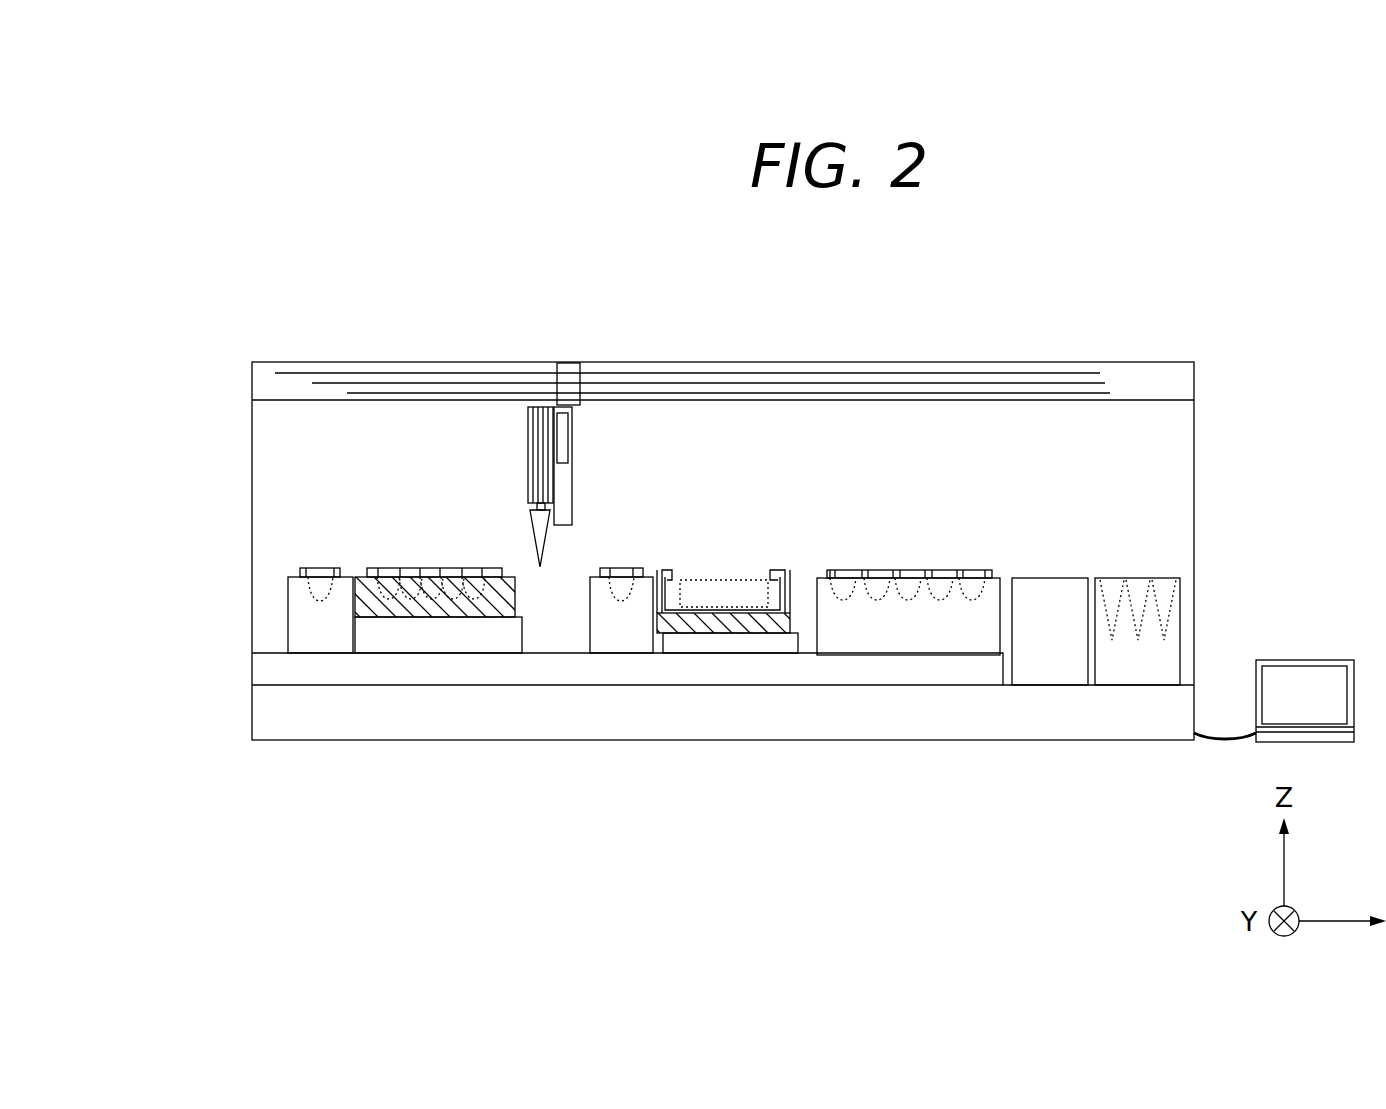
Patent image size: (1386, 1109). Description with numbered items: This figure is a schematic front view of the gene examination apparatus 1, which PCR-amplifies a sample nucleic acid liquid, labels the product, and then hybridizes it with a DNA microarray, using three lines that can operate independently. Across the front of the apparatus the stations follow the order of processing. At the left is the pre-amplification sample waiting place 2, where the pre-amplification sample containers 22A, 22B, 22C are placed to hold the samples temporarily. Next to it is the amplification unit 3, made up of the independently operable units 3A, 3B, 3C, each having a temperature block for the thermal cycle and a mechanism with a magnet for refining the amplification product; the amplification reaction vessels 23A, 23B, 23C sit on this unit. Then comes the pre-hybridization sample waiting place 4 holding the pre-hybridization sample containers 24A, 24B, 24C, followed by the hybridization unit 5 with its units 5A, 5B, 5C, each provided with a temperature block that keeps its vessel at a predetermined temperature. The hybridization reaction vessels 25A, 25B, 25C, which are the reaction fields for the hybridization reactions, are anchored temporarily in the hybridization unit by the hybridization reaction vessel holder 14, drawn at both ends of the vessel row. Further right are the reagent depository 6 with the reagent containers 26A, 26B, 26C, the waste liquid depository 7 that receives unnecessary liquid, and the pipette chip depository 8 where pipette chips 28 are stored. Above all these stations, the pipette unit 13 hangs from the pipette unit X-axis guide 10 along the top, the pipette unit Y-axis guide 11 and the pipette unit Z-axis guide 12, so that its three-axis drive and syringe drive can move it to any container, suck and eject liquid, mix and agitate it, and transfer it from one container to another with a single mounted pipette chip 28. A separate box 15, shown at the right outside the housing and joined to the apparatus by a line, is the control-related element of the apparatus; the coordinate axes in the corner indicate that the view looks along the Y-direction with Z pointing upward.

The gene examination apparatus 1 is at (1135, 267).
The pre-amplification sample waiting place 2 is at (211, 612).
The amplification unit 3 is at (330, 607).
The amplification unit of A line 3A is at (455, 686).
The amplification unit of B line 3B is at (455, 686).
The amplification unit of C line 3C is at (515, 598).
The pre-hybridization sample waiting place 4 is at (677, 533).
The hybridization unit 5 is at (746, 570).
The hybridization unit of A line 5A is at (735, 718).
The hybridization unit of B line 5B is at (735, 718).
The hybridization unit of C line 5C is at (765, 625).
The reagent depository 6 is at (923, 548).
The waste liquid depository 7 is at (1047, 694).
The pipette chip depository 8 is at (1139, 694).
The pipette unit X-axis guide 10 is at (270, 372).
The pipette unit Y-axis guide 11 is at (569, 363).
The pipette unit Z-axis guide 12 is at (573, 497).
The pipette unit 13 is at (504, 427).
The hybridization reaction vessel holder 14 is at (662, 655).
The control unit 15 is at (1350, 660).
The pre-amplification sample container 22A is at (205, 515).
The pre-amplification sample container 22B is at (205, 515).
The pre-amplification sample container 22C is at (297, 572).
The amplification reaction vessel 23A is at (286, 508).
The amplification reaction vessel 23B is at (286, 508).
The amplification reaction vessel 23C is at (368, 570).
The pre-hybridization sample container 24A is at (682, 436).
The pre-hybridization sample container 24B is at (682, 436).
The pre-hybridization sample container 24C is at (624, 568).
The hybridization reaction vessel 25A is at (758, 463).
The hybridization reaction vessel 25B is at (758, 463).
The hybridization reaction vessel 25C is at (728, 580).
The reagent container 26A is at (928, 450).
The reagent container 26B is at (928, 450).
The reagent container 26C is at (915, 572).
The pipette chip 28 is at (527, 523).